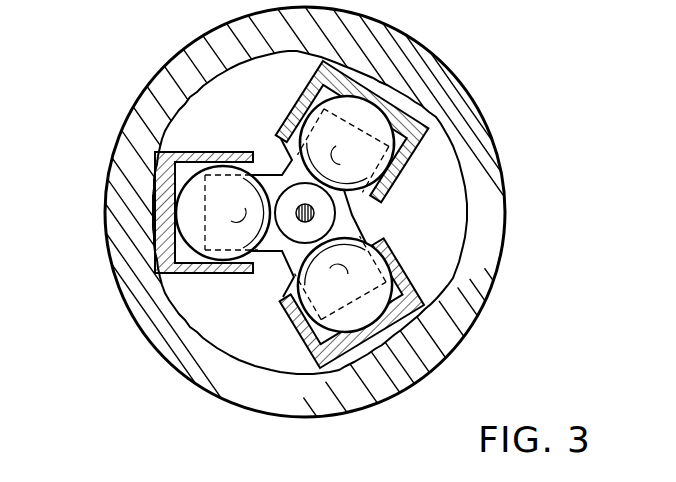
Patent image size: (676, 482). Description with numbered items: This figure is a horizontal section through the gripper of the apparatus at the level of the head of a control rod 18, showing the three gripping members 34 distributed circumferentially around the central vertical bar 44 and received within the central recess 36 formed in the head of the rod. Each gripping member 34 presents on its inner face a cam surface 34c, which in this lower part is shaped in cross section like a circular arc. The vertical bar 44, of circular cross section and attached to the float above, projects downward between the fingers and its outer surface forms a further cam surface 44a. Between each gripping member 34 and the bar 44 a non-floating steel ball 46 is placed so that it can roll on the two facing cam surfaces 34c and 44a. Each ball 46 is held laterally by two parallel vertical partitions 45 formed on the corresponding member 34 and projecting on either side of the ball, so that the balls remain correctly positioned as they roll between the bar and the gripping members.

The control rod 18 is at (126, 165).
The gripping member 34 is at (388, 77).
The cam surface 34c is at (175, 278).
The central recess 36 is at (440, 263).
The vertical bar 44 is at (352, 215).
The cam surface 44a is at (269, 265).
The vertical partitions 45 is at (300, 103).
The steel ball 46 is at (390, 122).